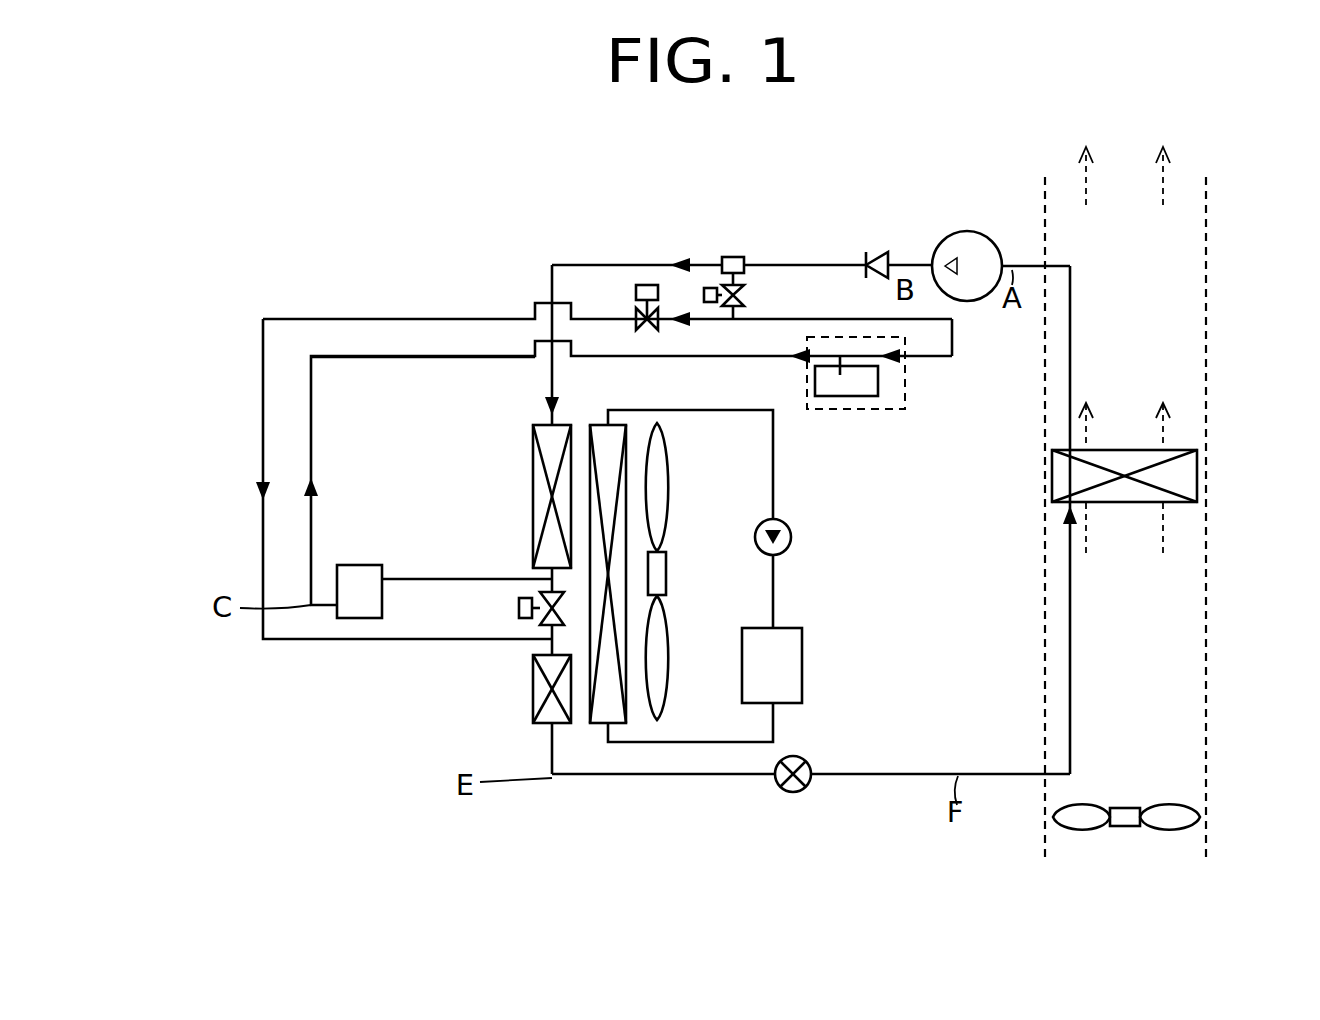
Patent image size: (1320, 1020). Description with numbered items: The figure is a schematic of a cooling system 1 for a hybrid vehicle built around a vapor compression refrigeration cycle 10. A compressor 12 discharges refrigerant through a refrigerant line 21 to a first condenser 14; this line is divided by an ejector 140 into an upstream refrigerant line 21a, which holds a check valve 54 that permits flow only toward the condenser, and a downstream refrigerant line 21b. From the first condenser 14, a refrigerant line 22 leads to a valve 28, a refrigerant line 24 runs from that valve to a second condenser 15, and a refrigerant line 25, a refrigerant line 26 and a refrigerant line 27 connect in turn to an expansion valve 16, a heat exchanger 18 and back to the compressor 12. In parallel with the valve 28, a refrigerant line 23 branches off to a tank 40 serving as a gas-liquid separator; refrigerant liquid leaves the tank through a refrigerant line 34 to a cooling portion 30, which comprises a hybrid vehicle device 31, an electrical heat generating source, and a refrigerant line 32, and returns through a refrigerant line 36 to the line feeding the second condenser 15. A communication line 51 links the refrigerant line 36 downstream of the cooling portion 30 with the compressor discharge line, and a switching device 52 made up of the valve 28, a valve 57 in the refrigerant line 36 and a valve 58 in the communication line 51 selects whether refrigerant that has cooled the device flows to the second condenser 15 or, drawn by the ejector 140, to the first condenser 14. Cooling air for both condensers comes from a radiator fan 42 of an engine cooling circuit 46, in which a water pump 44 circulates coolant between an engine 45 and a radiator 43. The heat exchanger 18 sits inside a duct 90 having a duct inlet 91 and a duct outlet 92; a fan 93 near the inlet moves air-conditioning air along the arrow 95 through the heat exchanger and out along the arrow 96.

The cooling system 1 is at (238, 153).
The vapor compression refrigeration cycle 10 is at (1082, 282).
The compressor 12 is at (968, 248).
The first condenser 14 is at (540, 497).
The second condenser 15 is at (540, 690).
The expansion valve 16 is at (793, 792).
The heat exchanger 18 is at (1068, 475).
The refrigerant line 21 is at (757, 500).
The refrigerant line 21a is at (762, 263).
The refrigerant line 21b is at (608, 263).
The refrigerant line 22 is at (550, 576).
The refrigerant line 23 is at (423, 579).
The refrigerant line 24 is at (552, 645).
The refrigerant line 25 is at (552, 750).
The refrigerant line 26 is at (882, 776).
The refrigerant line 27 is at (1026, 264).
The valve 28 is at (519, 608).
The cooling portion 30 is at (905, 395).
The hybrid vehicle (HV) device 31 is at (862, 385).
The refrigerant line 32 is at (840, 375).
The refrigerant line 34 is at (390, 357).
The refrigerant line 36 is at (263, 412).
The tank 40 is at (357, 598).
The radiator fan 42 is at (660, 440).
The radiator 43 is at (598, 438).
The water pump 44 is at (787, 522).
The engine 45 is at (790, 668).
The cooling circuit 46 is at (782, 597).
The communication line 51 is at (745, 318).
The switching device 52 is at (628, 415).
The check valve 54 is at (877, 253).
The valve 57 is at (647, 284).
The valve 58 is at (745, 293).
The duct 90 is at (1208, 370).
The duct inlet 91 is at (1182, 850).
The duct outlet 92 is at (1186, 190).
The fan 93 is at (1180, 815).
The arrow 95 is at (1163, 530).
The arrow 96 is at (1163, 198).
The ejector 140 is at (733, 257).